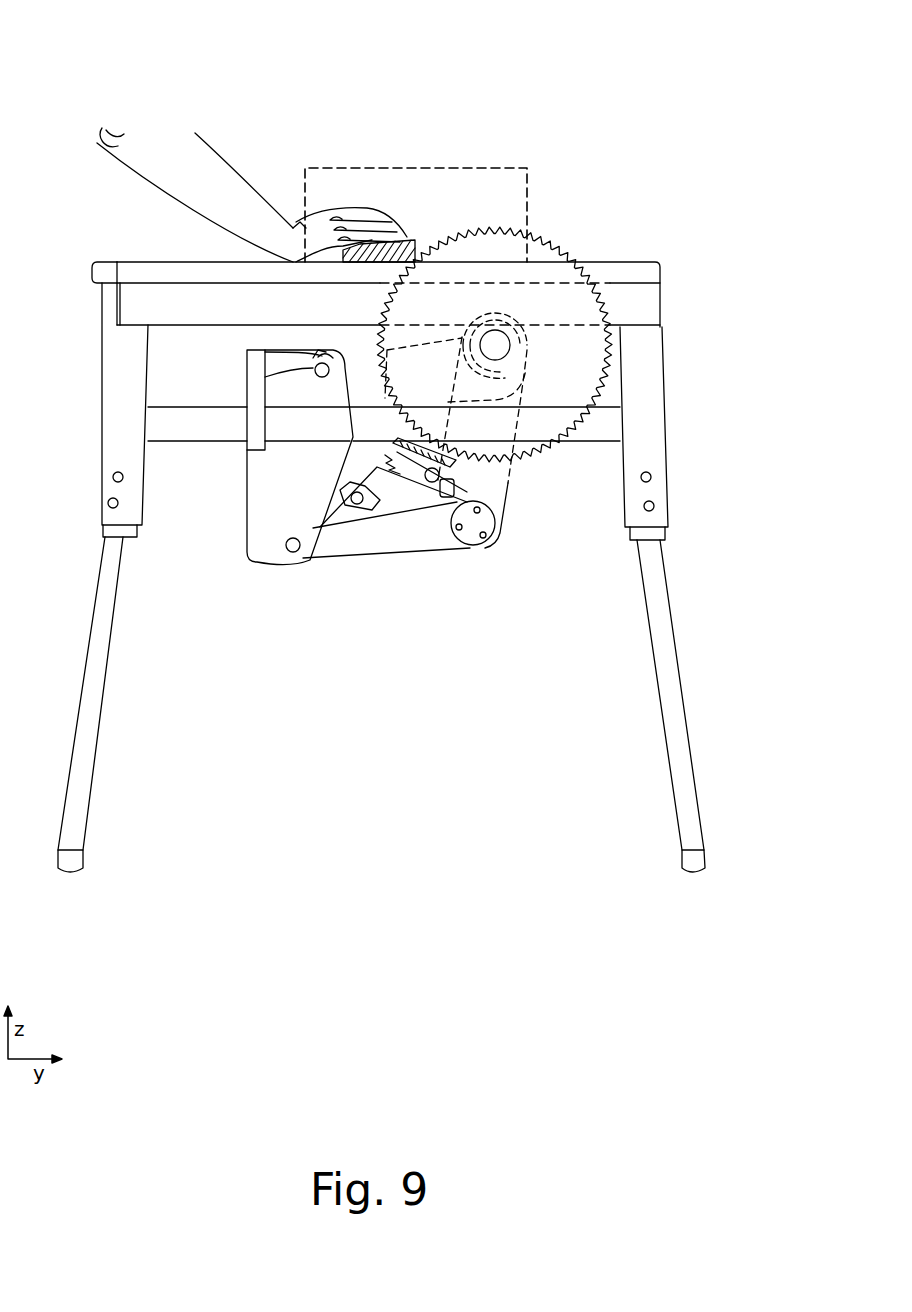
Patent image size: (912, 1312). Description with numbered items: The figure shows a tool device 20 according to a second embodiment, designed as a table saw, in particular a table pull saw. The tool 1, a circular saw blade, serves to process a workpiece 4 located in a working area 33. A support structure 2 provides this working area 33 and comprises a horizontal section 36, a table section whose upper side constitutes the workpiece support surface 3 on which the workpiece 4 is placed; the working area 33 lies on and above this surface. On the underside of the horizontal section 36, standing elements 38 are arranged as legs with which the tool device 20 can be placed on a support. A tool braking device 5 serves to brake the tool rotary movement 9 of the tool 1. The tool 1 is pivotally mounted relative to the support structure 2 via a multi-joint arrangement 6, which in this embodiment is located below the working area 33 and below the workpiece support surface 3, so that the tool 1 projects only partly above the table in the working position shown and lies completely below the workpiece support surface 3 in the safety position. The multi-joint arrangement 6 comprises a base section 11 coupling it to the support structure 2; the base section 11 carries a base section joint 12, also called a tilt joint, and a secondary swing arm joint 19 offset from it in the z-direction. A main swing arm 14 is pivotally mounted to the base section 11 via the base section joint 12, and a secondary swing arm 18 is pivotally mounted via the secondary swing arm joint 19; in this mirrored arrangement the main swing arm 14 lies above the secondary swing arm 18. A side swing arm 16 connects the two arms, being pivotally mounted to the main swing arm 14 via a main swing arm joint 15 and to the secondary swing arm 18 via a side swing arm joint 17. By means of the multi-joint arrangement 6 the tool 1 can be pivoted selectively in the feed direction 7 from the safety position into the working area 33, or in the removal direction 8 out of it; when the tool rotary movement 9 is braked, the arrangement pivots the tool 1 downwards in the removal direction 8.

The tool device 20 is at (122, 80).
The tool 1 is at (530, 250).
The support structure 2 is at (439, 292).
The horizontal section 36 is at (643, 305).
The workpiece support surface 3 is at (370, 262).
The workpiece 4 is at (394, 250).
The working area 33 is at (417, 203).
The tool braking device 5 is at (417, 467).
The multi-joint arrangement 6 is at (352, 571).
The feed direction 7 is at (463, 265).
The removal direction 8 is at (495, 373).
The tool rotary movement 9 is at (491, 298).
The base section 11 is at (255, 502).
The base section joint 12 is at (317, 372).
The main swing arm 14 is at (357, 360).
The main swing arm joint 15 is at (500, 347).
The side swing arm 16 is at (492, 478).
The side swing arm joint 17 is at (473, 525).
The secondary swing arm 18 is at (372, 542).
The secondary swing arm joint 19 is at (293, 553).
The standing elements 38 is at (82, 757).